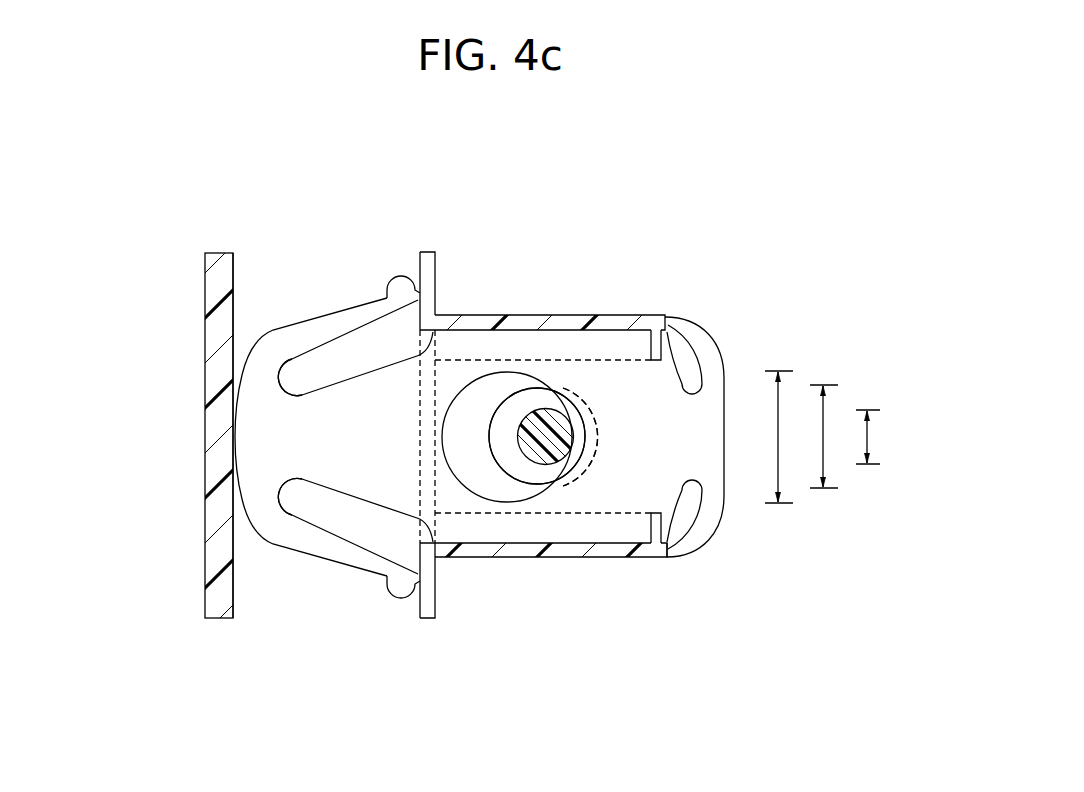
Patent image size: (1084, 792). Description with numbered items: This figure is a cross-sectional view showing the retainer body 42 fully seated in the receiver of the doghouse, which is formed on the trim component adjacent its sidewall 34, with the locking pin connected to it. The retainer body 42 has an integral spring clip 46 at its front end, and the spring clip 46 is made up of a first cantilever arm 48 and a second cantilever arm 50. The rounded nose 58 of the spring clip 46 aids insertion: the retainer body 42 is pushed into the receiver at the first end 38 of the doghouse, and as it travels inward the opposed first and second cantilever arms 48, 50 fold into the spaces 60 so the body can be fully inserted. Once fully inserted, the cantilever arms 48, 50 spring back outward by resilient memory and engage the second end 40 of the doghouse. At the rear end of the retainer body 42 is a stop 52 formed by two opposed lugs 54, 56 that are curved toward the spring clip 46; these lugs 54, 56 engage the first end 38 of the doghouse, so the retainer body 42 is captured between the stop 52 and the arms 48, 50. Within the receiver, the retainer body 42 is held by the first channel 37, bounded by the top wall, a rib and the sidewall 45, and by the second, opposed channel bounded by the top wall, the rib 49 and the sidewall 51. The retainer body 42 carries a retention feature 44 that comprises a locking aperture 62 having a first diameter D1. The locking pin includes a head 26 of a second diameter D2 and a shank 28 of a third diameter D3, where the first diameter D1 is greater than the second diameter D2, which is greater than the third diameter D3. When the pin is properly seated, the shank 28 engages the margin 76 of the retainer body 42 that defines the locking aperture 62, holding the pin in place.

The sidewall 34 is at (206, 523).
The rounded nose 58 is at (232, 421).
The first cantilever arm 48 is at (298, 327).
The second cantilever arm 50 is at (310, 538).
The spaces 60 is at (340, 355).
The spring clip 46 is at (350, 592).
The second end 40 is at (416, 275).
The sidewall 45 is at (512, 322).
The sidewall 51 is at (467, 560).
The first end 38 is at (668, 556).
The first channel 37 is at (611, 360).
The rib 49 is at (611, 513).
The retainer body 42 is at (470, 370).
The stop 52 is at (727, 423).
The lug 54 is at (681, 332).
The lug 56 is at (683, 538).
The retention feature 44 is at (507, 503).
The locking aperture 62 is at (537, 517).
The shank 28 is at (554, 410).
The head 26 is at (583, 390).
The margin 76 is at (567, 483).
The first diameter D1 is at (778, 476).
The second diameter D2 is at (823, 458).
The third diameter D3 is at (867, 437).